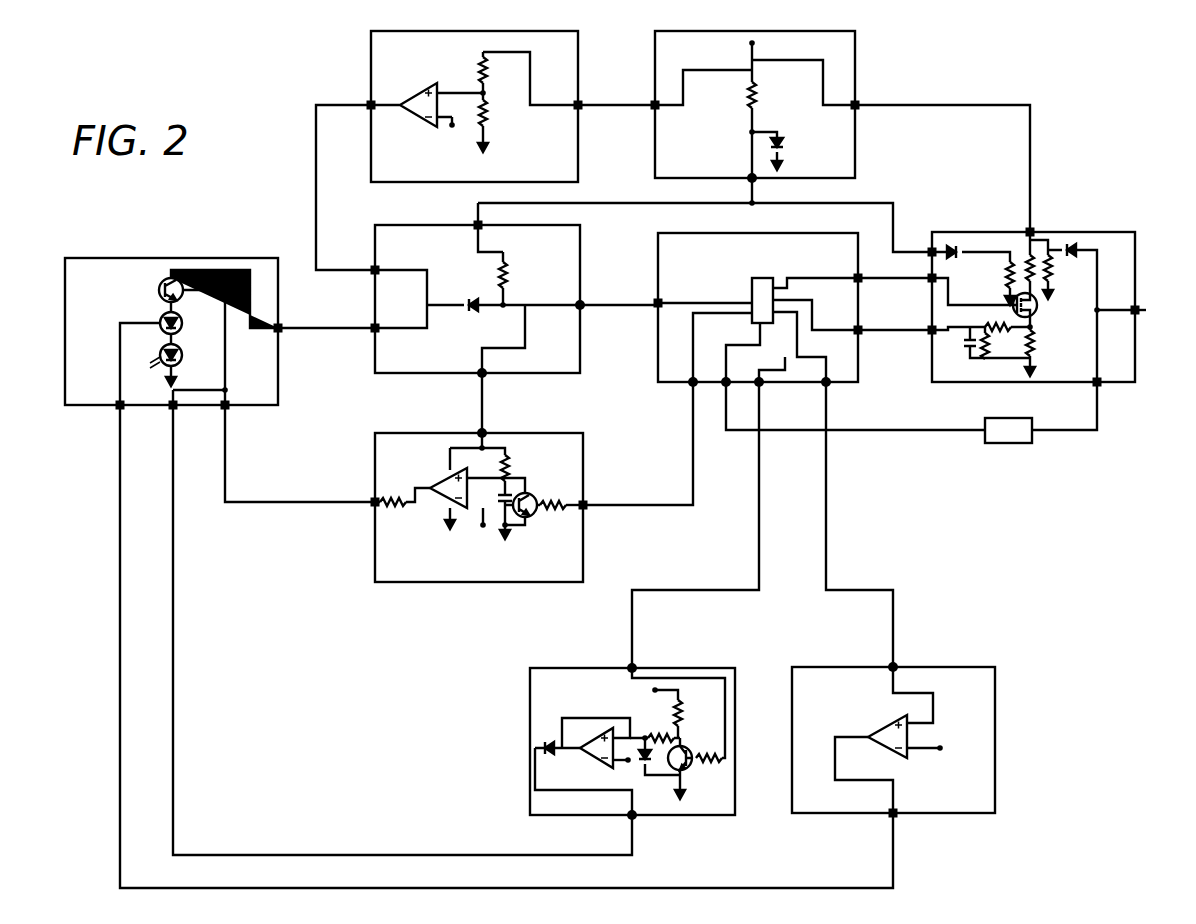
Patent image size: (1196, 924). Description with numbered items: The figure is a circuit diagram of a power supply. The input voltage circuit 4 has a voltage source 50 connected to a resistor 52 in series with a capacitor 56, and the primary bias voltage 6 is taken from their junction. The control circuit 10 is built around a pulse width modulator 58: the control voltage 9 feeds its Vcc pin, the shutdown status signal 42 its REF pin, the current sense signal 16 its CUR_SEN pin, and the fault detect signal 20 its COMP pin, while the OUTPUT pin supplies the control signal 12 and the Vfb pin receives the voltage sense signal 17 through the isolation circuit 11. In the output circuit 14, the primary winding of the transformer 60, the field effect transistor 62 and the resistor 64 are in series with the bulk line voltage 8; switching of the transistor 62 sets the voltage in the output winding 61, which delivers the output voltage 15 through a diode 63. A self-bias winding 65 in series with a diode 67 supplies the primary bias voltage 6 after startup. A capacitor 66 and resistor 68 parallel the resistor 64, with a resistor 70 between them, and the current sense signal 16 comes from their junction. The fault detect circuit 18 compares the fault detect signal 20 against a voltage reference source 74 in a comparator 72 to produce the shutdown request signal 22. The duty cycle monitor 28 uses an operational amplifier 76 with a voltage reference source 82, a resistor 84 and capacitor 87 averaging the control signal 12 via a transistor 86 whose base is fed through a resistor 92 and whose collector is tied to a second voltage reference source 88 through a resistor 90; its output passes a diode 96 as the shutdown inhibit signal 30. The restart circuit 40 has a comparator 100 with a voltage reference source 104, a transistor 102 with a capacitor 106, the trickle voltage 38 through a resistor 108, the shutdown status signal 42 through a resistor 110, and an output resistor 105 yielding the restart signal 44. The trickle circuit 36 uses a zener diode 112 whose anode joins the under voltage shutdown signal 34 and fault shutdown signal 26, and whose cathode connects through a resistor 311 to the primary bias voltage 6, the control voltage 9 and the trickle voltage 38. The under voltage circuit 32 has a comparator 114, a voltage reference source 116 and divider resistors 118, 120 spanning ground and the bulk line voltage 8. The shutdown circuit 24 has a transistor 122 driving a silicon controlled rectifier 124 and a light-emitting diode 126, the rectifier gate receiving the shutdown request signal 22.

The input voltage circuit 4 is at (855, 170).
The primary bias voltage 6 is at (624, 202).
The bulk line voltage 8 is at (612, 104).
The control voltage 9 is at (621, 304).
The control circuit 10 is at (814, 234).
The isolation circuit 11 is at (1022, 444).
The control signal 12 is at (893, 286).
The output circuit 14 is at (997, 230).
The output voltage 15 is at (1149, 310).
The current sense signal 16 is at (882, 334).
The voltage sense signal 17 is at (900, 432).
The fault detect circuit 18 is at (951, 666).
The fault detect signal 20 is at (826, 484).
The shutdown request signal 22 is at (893, 838).
The shutdown circuit 24 is at (214, 260).
The fault shutdown signal 26 is at (340, 328).
The duty cycle monitor 28 is at (568, 668).
The shutdown inhibit signal 30 is at (410, 848).
The under voltage circuit 32 is at (570, 32).
The under voltage shutdown signal 34 is at (326, 102).
The trickle circuit 36 is at (588, 348).
The trickle voltage 38 is at (482, 396).
The restart circuit 40 is at (417, 432).
The shutdown status signal 42 is at (616, 504).
The restart signal 44 is at (298, 502).
The voltage source 50 is at (756, 43).
The resistor 52 is at (756, 96).
The capacitor 56 is at (784, 148).
The pulse width modulator 58 is at (762, 278).
The transformer 60 is at (1041, 262).
The output winding 61 is at (1052, 272).
The field effect transistor 62 is at (1037, 310).
The diode 63 is at (1080, 246).
The resistor 64 is at (1036, 350).
The self-bias winding 65 is at (1006, 274).
The capacitor 66 is at (964, 344).
The diode 67 is at (971, 266).
The resistor 68 is at (997, 343).
The resistor 70 is at (984, 328).
The comparator 72 is at (894, 726).
The voltage reference source 74 is at (940, 750).
The operational amplifier 76 is at (606, 764).
The voltage reference source 82 is at (630, 764).
The resistor 84 is at (655, 723).
The transistor 86 is at (690, 768).
The capacitor 87 is at (659, 757).
The second voltage reference source 88 is at (650, 690).
The resistor 90 is at (682, 706).
The resistor 92 is at (710, 747).
The diode 96 is at (548, 756).
The comparator 100 is at (438, 482).
The transistor 102 is at (532, 492).
The voltage reference source 104 is at (483, 528).
The resistor 105 is at (401, 509).
The capacitor 106 is at (498, 508).
The resistor 108 is at (508, 462).
The resistor 110 is at (558, 510).
The zener diode 112 is at (465, 302).
The comparator 114 is at (424, 96).
The voltage reference source 116 is at (452, 125).
The resistor 118 is at (528, 78).
The resistor 120 is at (507, 122).
The transistor 122 is at (160, 292).
The silicon controlled rectifier 124 is at (160, 324).
The light-emitting diode 126 is at (180, 345).
The resistor 311 is at (508, 282).